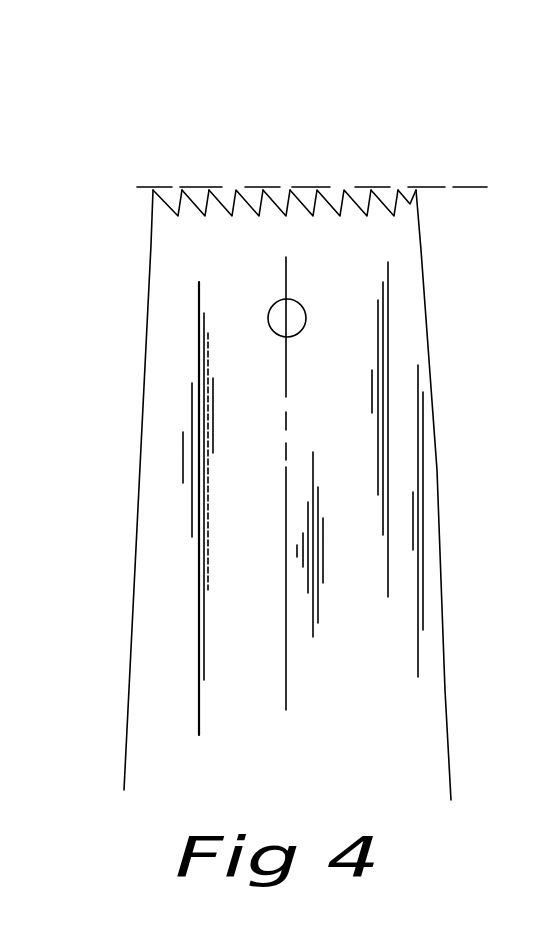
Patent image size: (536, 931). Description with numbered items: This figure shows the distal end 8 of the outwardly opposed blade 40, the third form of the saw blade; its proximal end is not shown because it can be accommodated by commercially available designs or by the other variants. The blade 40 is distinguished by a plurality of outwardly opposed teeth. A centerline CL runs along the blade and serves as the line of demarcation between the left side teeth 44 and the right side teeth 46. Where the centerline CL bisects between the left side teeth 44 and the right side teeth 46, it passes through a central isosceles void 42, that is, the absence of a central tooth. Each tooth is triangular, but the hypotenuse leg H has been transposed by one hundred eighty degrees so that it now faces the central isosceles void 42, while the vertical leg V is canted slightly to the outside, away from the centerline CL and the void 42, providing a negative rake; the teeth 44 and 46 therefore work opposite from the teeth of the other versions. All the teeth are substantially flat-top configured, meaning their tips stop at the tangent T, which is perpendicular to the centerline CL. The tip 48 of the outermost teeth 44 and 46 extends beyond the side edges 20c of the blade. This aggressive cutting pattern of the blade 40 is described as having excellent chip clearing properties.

The tangent T is at (471, 180).
The tip 48 is at (152, 192).
The left side teeth 44 is at (163, 200).
The central isosceles void 42 is at (287, 214).
The right side teeth 46 is at (415, 190).
The hypotenuse leg H is at (220, 214).
The vertical leg V is at (205, 210).
The centerline CL is at (280, 686).
The side edges 20c is at (442, 637).
The outwardly opposed blade 40 is at (338, 483).
The distal end 8 is at (407, 445).